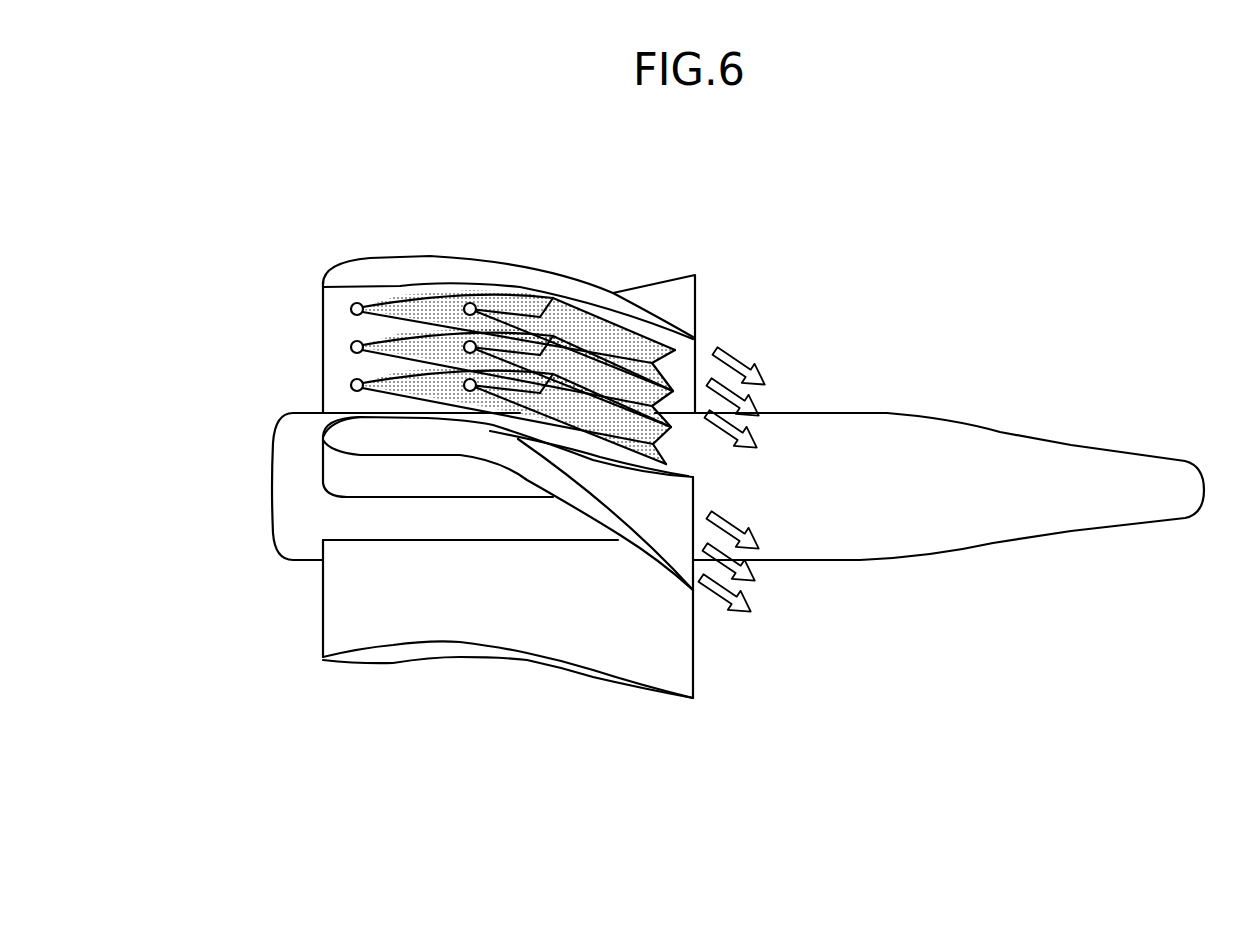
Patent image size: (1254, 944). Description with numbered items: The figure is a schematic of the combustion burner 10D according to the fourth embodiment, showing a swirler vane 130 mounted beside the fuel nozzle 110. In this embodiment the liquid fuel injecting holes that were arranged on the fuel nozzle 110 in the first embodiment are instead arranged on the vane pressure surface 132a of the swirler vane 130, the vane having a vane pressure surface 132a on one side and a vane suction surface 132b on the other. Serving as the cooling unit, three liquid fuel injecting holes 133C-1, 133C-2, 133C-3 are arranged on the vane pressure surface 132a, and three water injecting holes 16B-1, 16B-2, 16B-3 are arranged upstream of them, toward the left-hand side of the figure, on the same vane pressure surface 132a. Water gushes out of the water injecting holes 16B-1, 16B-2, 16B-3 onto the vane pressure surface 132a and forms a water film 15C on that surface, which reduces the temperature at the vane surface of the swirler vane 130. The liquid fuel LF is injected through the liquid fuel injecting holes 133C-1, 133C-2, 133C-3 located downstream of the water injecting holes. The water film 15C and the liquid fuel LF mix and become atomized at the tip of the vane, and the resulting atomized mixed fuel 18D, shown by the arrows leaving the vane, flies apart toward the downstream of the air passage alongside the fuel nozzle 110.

The combustion burner 10D is at (716, 207).
The water film 15C is at (513, 298).
The water injecting hole 16B-1 is at (351, 309).
The water injecting hole 16B-2 is at (351, 347).
The water injecting hole 16B-3 is at (351, 385).
The atomized mixed fuel 18D is at (743, 358).
The fuel nozzle 110 is at (1008, 440).
The swirler vane 130 is at (593, 300).
The vane pressure surface 132a is at (413, 480).
The vane suction surface 132b is at (668, 490).
The liquid fuel injecting hole 133C-1 is at (468, 303).
The liquid fuel injecting hole 133C-2 is at (464, 347).
The liquid fuel injecting hole 133C-3 is at (464, 386).
The liquid fuel LF is at (640, 345).